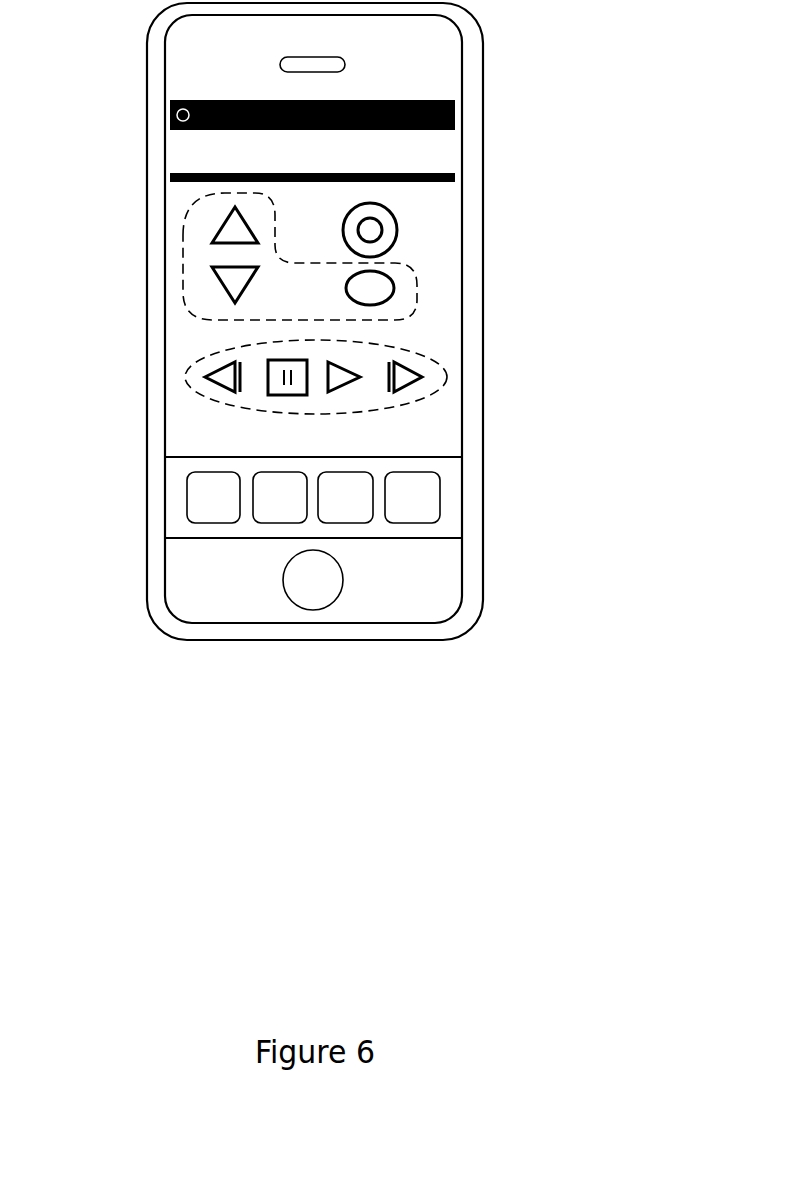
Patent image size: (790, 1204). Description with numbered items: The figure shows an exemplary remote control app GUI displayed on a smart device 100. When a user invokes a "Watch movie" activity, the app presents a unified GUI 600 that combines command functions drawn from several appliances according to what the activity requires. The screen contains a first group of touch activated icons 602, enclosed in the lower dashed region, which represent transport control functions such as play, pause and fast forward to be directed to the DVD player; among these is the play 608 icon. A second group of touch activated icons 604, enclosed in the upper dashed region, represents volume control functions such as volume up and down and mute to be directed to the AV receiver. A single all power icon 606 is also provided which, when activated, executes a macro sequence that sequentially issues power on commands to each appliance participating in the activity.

The smart device 100 is at (433, 742).
The GUI 600 is at (319, 338).
The first group of touch activated icons 602 is at (375, 358).
The second group of touch activated icons 604 is at (293, 232).
The all power icon 606 is at (381, 200).
The play 608 is at (337, 363).